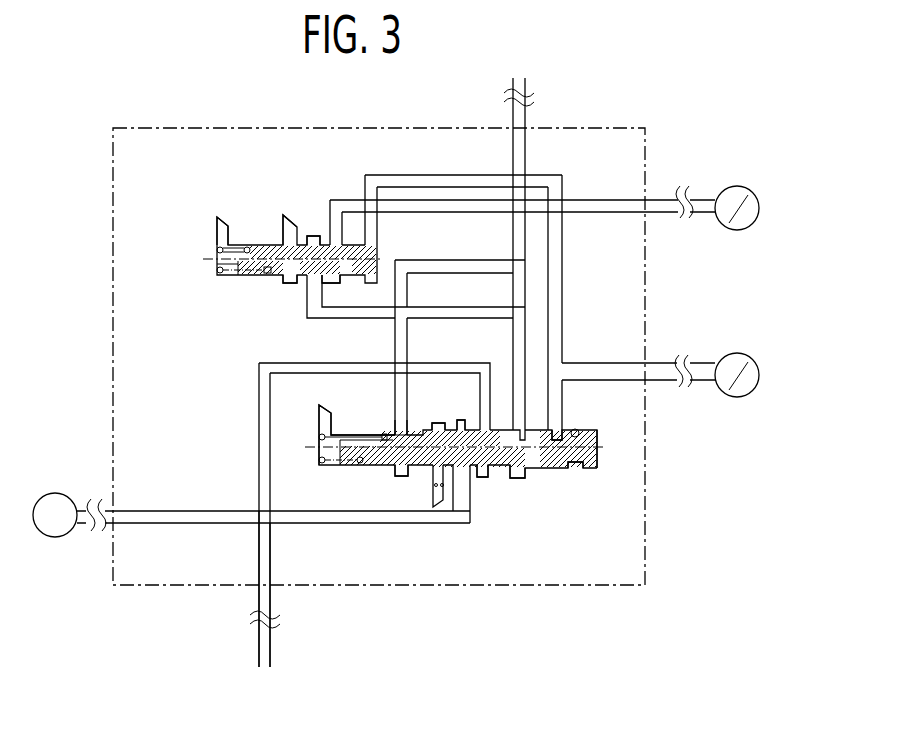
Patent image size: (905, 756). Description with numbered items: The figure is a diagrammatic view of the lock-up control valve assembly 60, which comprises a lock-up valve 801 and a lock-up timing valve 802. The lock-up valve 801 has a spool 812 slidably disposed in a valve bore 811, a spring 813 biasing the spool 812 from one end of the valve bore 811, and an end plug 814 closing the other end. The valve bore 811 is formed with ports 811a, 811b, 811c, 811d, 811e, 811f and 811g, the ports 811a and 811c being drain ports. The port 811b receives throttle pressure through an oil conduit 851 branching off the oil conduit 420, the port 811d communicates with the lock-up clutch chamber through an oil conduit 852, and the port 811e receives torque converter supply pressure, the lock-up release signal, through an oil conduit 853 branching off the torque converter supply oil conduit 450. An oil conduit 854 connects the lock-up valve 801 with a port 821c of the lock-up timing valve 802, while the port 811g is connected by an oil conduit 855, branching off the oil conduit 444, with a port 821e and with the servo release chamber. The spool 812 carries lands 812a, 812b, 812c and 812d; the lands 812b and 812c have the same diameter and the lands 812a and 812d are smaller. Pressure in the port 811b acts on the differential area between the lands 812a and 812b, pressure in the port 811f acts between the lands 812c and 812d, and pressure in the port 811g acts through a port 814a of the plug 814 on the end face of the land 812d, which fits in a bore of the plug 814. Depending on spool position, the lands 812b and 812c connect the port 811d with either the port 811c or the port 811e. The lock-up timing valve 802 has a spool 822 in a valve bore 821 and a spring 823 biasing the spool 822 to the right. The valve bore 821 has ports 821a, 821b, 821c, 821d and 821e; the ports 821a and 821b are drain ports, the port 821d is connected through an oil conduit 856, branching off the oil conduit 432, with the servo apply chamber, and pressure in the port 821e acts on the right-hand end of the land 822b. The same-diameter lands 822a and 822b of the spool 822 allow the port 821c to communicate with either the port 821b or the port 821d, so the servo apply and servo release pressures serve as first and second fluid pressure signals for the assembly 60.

The lock-up control valve assembly 60 is at (167, 124).
The lock-up timing valve 802 is at (207, 256).
The valve bore 821 is at (222, 274).
The port 821a is at (217, 246).
The port 821b is at (280, 238).
The port 821c is at (313, 234).
The port 821d is at (363, 190).
The port 821e is at (367, 238).
The spool 822 is at (250, 276).
The land 822a is at (282, 284).
The land 822b is at (352, 282).
The spring 823 is at (240, 277).
The oil conduit 851 is at (410, 337).
The oil conduit 854 is at (470, 312).
The oil conduit 855 is at (564, 303).
The oil conduit 856 is at (612, 198).
The oil conduit 852 is at (379, 525).
The oil conduit 853 is at (272, 565).
The oil conduit 420 is at (528, 89).
The oil conduit 432 is at (705, 178).
The oil conduit 444 is at (699, 362).
The torque converter supply oil conduit 450 is at (272, 653).
The lock-up valve 801 is at (473, 519).
The valve bore 811 is at (338, 432).
The port 811a is at (323, 416).
The port 811b is at (406, 430).
The port 811c is at (411, 430).
The port 811d is at (433, 427).
The port 811e is at (486, 422).
The port 811f is at (518, 425).
The port 811g is at (553, 428).
The spool 812 is at (393, 437).
The land 812a is at (373, 458).
The land 812b is at (422, 466).
The land 812c is at (471, 468).
The land 812d is at (520, 478).
The spring 813 is at (328, 466).
The end plug 814 is at (585, 469).
The port 814a is at (566, 428).